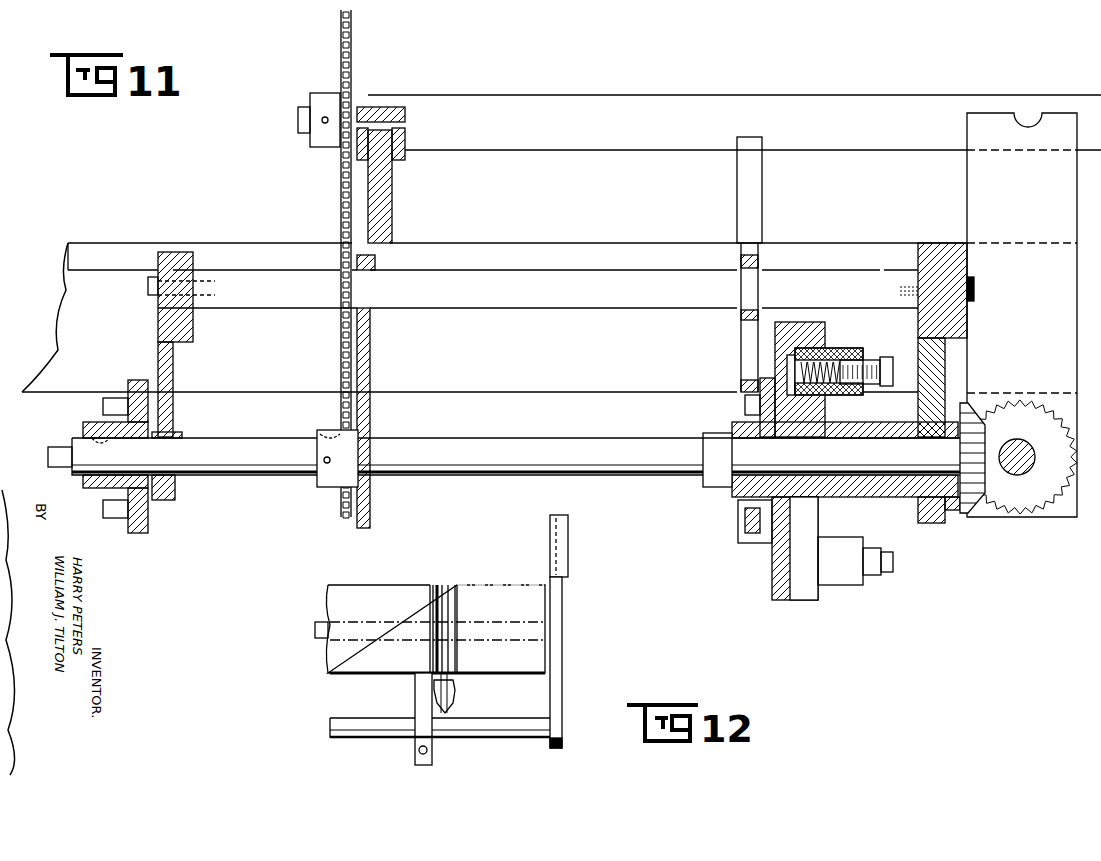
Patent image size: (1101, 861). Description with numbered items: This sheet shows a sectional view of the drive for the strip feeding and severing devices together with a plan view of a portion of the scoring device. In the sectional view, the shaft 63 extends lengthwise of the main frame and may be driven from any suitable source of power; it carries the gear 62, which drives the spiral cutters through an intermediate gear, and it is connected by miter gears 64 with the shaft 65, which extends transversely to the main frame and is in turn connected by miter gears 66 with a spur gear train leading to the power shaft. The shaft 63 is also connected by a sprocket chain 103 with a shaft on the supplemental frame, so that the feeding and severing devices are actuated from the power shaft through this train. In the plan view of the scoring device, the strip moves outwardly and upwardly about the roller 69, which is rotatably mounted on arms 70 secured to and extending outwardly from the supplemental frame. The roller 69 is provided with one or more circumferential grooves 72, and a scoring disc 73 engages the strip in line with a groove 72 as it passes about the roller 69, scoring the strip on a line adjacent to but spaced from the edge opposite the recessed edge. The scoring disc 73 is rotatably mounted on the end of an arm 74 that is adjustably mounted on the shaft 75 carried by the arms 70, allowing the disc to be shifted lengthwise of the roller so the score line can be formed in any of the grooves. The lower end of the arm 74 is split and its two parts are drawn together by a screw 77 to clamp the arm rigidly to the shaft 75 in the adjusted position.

In FIG. 11, the sprocket chain 103 is at (340, 203).
In FIG. 11, the gear 62 is at (125, 538).
In FIG. 11, the shaft 63 is at (218, 483).
In FIG. 11, the miter gears 64 is at (970, 515).
In FIG. 11, the shaft 65 is at (1012, 445).
In FIG. 11, the miter gears 66 is at (1048, 518).
In FIG. 12, the roller 69 is at (528, 661).
In FIG. 12, the arms 70 is at (557, 676).
In FIG. 12, the circumferential groove 72 is at (440, 580).
In FIG. 12, the scoring disc 73 is at (455, 692).
In FIG. 12, the arm 74 is at (415, 697).
In FIG. 12, the shaft 75 is at (478, 737).
In FIG. 12, the screw 77 is at (419, 752).